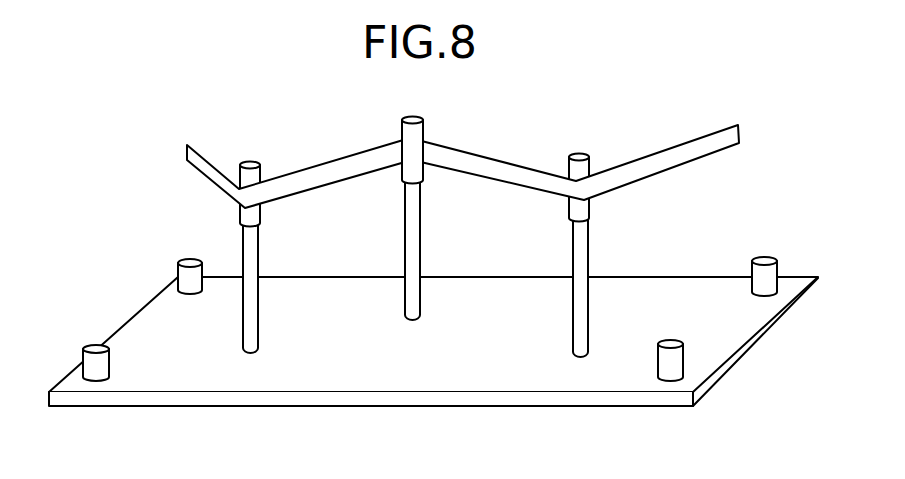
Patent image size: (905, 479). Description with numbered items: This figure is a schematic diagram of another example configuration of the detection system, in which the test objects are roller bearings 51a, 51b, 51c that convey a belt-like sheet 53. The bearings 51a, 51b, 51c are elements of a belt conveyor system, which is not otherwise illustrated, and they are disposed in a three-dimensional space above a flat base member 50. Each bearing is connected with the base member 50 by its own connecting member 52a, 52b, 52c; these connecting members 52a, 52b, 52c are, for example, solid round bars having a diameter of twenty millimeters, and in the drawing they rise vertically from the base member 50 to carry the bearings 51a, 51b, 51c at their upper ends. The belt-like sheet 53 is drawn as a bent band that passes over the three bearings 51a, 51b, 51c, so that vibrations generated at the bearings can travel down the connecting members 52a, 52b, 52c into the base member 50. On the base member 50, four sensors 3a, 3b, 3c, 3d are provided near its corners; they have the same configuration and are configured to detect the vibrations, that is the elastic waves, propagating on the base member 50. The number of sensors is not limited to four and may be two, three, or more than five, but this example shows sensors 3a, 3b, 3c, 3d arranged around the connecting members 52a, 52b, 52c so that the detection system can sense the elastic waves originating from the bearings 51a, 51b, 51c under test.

The sensor 3a is at (180, 264).
The sensor 3b is at (763, 258).
The sensor 3c is at (85, 350).
The sensor 3d is at (684, 362).
The base member 50 is at (220, 406).
The roller bearing 51a is at (253, 164).
The roller bearing 51b is at (412, 118).
The roller bearing 51c is at (583, 156).
The connecting member 52a is at (258, 250).
The connecting member 52b is at (418, 216).
The connecting member 52c is at (586, 240).
The belt-like sheet 53 is at (672, 166).